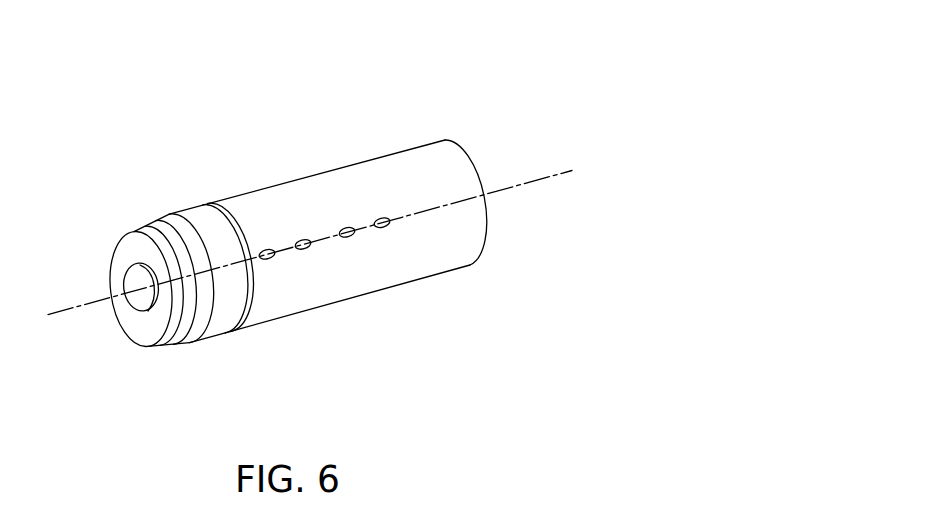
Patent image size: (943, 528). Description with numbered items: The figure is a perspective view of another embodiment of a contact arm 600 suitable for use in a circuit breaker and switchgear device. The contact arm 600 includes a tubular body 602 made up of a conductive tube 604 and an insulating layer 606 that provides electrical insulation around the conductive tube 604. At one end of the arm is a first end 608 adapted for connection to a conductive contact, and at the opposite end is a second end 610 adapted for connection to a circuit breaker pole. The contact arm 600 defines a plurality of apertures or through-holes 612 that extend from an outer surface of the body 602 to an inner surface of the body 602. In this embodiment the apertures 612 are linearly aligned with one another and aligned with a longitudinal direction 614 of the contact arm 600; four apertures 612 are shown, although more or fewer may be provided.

The contact arm 600 is at (536, 58).
The tubular body 602 is at (207, 345).
The conductive tube 604 is at (188, 219).
The insulating layer 606 is at (352, 174).
The first end 608 is at (123, 322).
The second end 610 is at (486, 160).
The apertures 612 is at (267, 249).
The longitudinal direction 614 is at (540, 177).